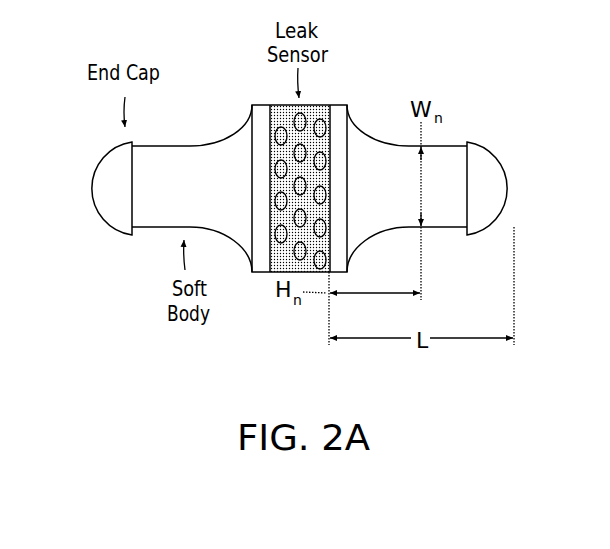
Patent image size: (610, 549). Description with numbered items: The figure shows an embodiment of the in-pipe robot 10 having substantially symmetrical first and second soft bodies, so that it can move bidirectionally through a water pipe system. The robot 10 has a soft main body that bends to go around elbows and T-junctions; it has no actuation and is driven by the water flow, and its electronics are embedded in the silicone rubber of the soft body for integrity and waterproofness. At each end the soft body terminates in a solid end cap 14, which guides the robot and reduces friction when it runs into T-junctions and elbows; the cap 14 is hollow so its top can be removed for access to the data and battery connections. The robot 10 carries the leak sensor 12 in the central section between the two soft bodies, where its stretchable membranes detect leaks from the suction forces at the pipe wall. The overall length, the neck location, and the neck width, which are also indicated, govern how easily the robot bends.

The robot 10 is at (178, 158).
The leak sensor 12 is at (310, 107).
The end cap 14 is at (102, 212).